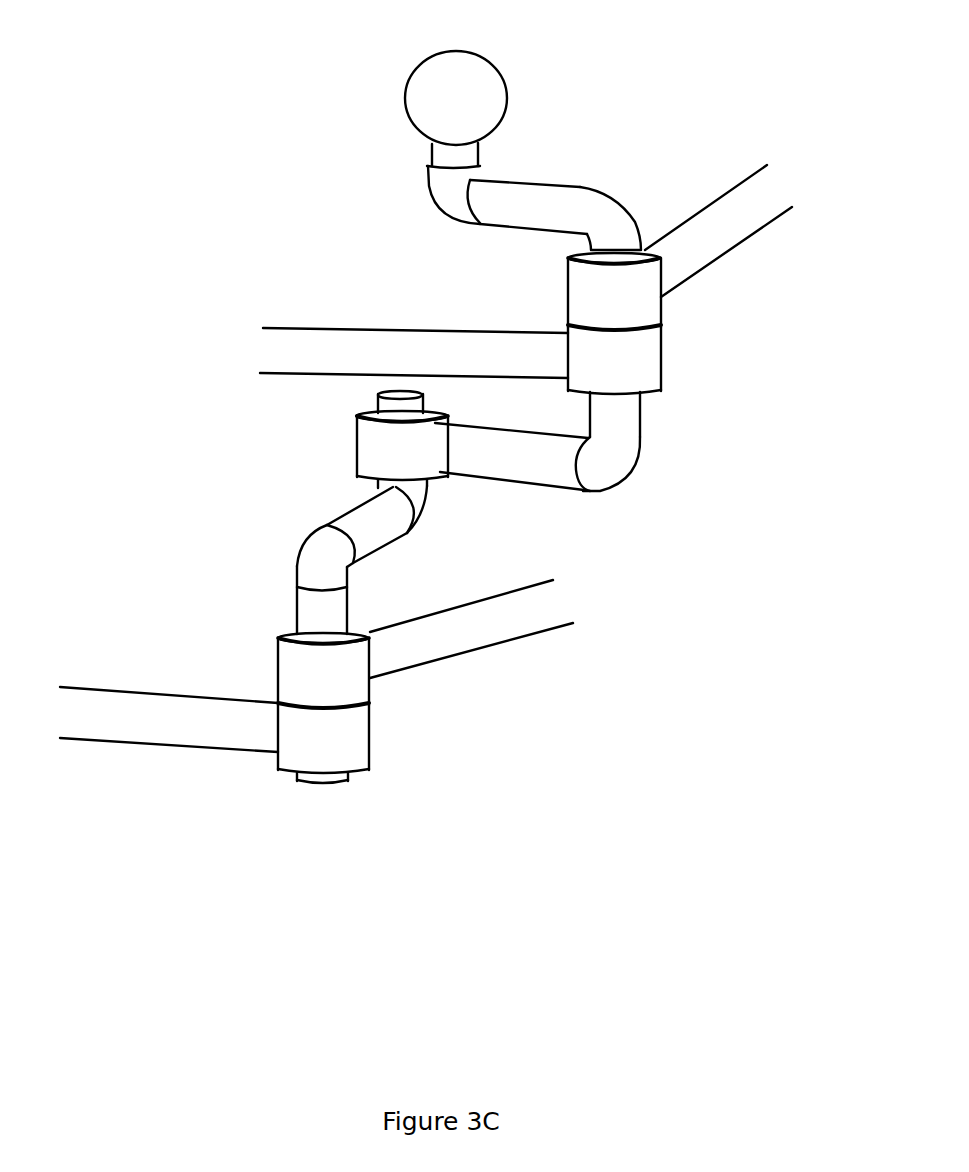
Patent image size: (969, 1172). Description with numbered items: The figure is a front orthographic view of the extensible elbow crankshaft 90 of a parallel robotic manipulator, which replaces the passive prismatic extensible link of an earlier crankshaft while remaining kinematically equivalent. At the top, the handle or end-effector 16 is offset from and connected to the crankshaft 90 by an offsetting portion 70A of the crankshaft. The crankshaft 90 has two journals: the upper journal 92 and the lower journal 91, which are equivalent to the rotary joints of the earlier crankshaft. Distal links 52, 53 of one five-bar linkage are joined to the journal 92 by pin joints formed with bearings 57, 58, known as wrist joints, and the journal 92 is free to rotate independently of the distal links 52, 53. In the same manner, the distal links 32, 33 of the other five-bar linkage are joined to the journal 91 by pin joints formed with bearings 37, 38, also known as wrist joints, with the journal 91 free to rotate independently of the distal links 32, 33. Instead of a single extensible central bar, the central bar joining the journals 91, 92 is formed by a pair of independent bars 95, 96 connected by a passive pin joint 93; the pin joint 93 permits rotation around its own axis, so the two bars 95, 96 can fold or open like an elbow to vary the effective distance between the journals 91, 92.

The handle or end-effector 16 is at (478, 83).
The extensible elbow crankshaft 90 is at (278, 182).
The offsetting portion of the crankshaft 70A is at (582, 188).
The distal link 52 is at (372, 345).
The distal link 53 is at (725, 228).
The bearing (wrist joint) 57 is at (642, 300).
The bearing (wrist joint) 58 is at (642, 360).
The journal 92 is at (620, 425).
The passive pin joint 93 is at (410, 462).
The independent bar 96 is at (543, 455).
The independent bar 95 is at (365, 532).
The journal 91 is at (318, 603).
The bearing (wrist joint) 37 is at (347, 677).
The bearing (wrist joint) 38 is at (353, 742).
The distal link 33 is at (512, 625).
The distal link 32 is at (170, 732).